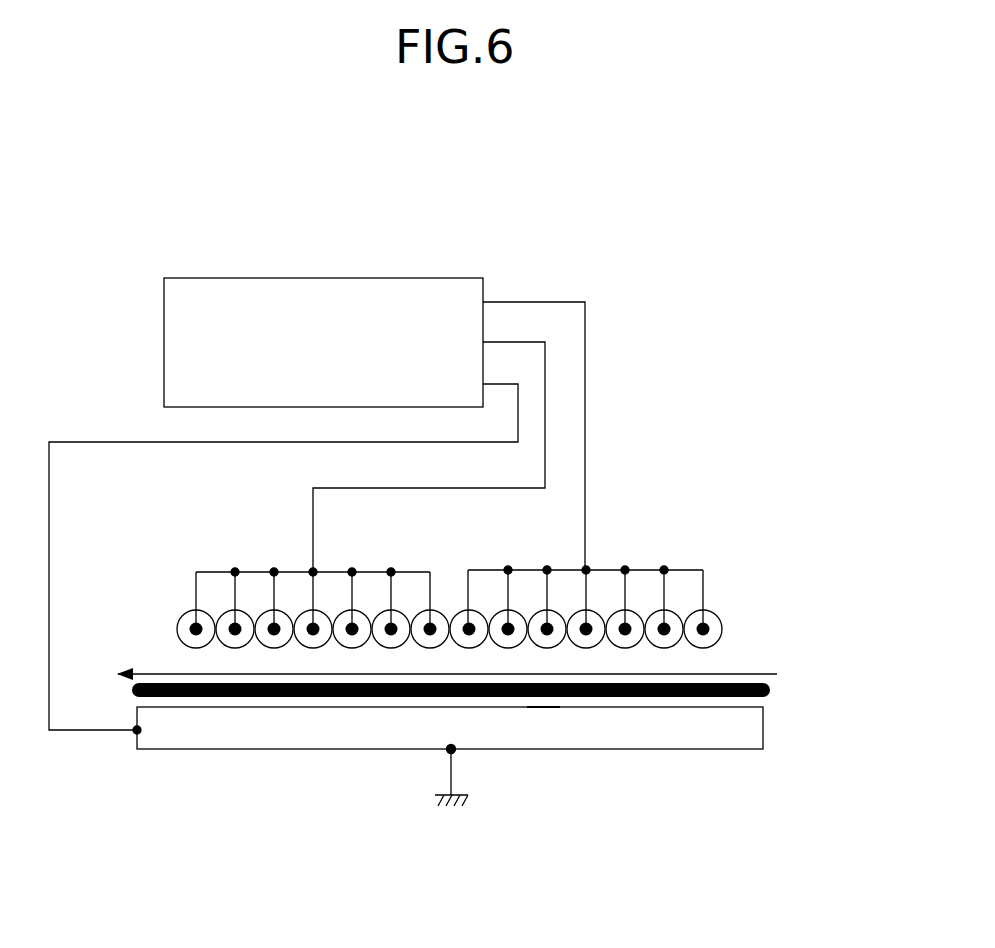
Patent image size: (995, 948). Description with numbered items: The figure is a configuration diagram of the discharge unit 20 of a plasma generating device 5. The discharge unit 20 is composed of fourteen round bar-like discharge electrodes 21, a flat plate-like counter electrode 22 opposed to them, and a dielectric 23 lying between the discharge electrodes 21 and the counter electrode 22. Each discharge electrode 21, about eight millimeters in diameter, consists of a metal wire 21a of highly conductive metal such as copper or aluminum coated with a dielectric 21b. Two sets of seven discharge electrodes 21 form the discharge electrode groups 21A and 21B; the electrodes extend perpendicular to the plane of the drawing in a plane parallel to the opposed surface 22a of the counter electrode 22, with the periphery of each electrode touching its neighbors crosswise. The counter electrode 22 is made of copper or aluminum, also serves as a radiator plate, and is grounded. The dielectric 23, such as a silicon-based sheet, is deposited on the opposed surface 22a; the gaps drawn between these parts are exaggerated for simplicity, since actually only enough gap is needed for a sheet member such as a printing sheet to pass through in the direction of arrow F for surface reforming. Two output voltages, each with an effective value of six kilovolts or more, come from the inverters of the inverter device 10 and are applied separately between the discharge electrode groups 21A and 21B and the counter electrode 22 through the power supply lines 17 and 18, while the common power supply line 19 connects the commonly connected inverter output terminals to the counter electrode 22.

The plasma generating device 5 is at (652, 209).
The inverter device 10 is at (323, 278).
The power supply line 17 is at (585, 315).
The power supply line 18 is at (545, 378).
The common power supply line 19 is at (518, 415).
The discharge unit 20 is at (325, 778).
The discharge electrode 21 is at (173, 617).
The discharge electrode group 21A is at (645, 555).
The discharge electrode group 21B is at (250, 560).
The metal wire 21a is at (505, 622).
The dielectric 21b is at (519, 617).
The counter electrode 22 is at (750, 728).
The opposed surface 22a is at (527, 707).
The dielectric 23 is at (770, 688).